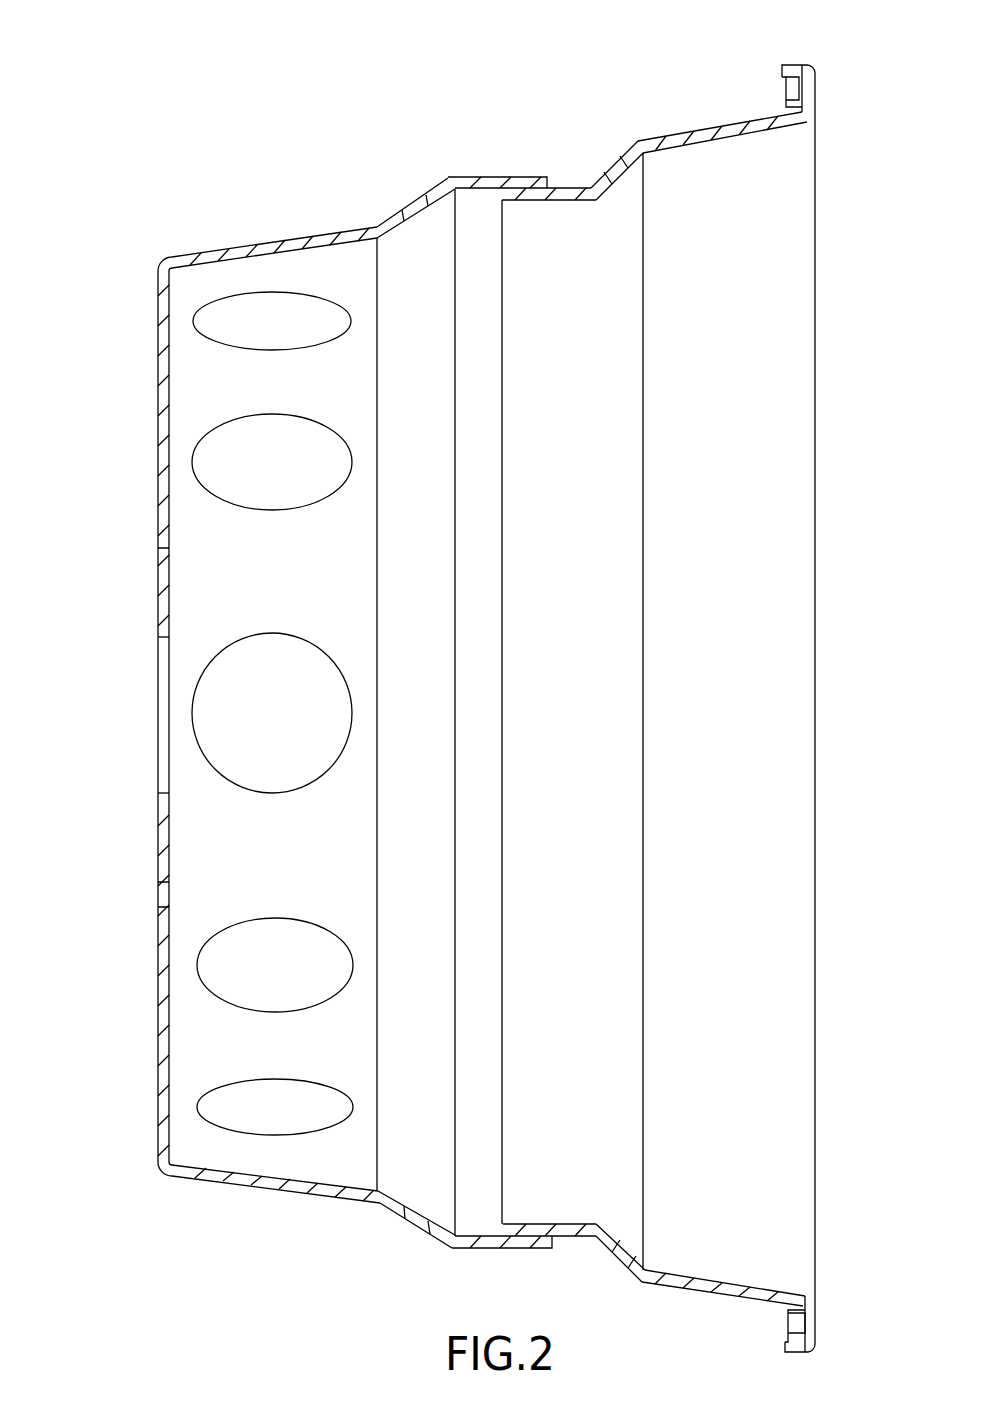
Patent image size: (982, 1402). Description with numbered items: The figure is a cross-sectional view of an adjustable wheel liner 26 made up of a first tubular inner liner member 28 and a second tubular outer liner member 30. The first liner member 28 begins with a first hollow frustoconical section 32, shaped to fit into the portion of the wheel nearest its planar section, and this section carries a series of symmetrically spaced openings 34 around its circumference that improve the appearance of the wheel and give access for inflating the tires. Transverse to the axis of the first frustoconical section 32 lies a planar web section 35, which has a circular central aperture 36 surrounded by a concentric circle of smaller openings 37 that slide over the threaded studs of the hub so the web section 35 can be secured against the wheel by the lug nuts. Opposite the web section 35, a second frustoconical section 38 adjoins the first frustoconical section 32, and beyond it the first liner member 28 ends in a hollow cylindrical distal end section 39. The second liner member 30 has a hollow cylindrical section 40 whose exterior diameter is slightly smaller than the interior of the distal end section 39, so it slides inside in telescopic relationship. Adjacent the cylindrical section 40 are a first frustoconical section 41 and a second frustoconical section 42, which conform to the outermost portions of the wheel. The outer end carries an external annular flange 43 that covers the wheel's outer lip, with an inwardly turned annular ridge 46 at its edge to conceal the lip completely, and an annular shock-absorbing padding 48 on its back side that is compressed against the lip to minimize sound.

The adjustable wheel liner 26 is at (457, 109).
The first tubular inner liner member 28 is at (340, 228).
The second tubular outer liner member 30 is at (757, 112).
The first hollow frustoconical section 32 is at (222, 245).
The openings 34 is at (300, 415).
The planar web section 35 is at (157, 383).
The circular central aperture 36 is at (163, 637).
The smaller openings 37 is at (160, 543).
The second frustoconical section 38 is at (428, 190).
The hollow cylindrical distal end section 39 is at (527, 1248).
The hollow cylindrical section 40 is at (560, 200).
The first frustoconical section 41 is at (613, 168).
The second frustoconical section 42 is at (705, 128).
The external annular flange 43 is at (817, 100).
The inwardly turned annular ridge 46 is at (790, 62).
The annular shock-absorbing padding 48 is at (795, 93).